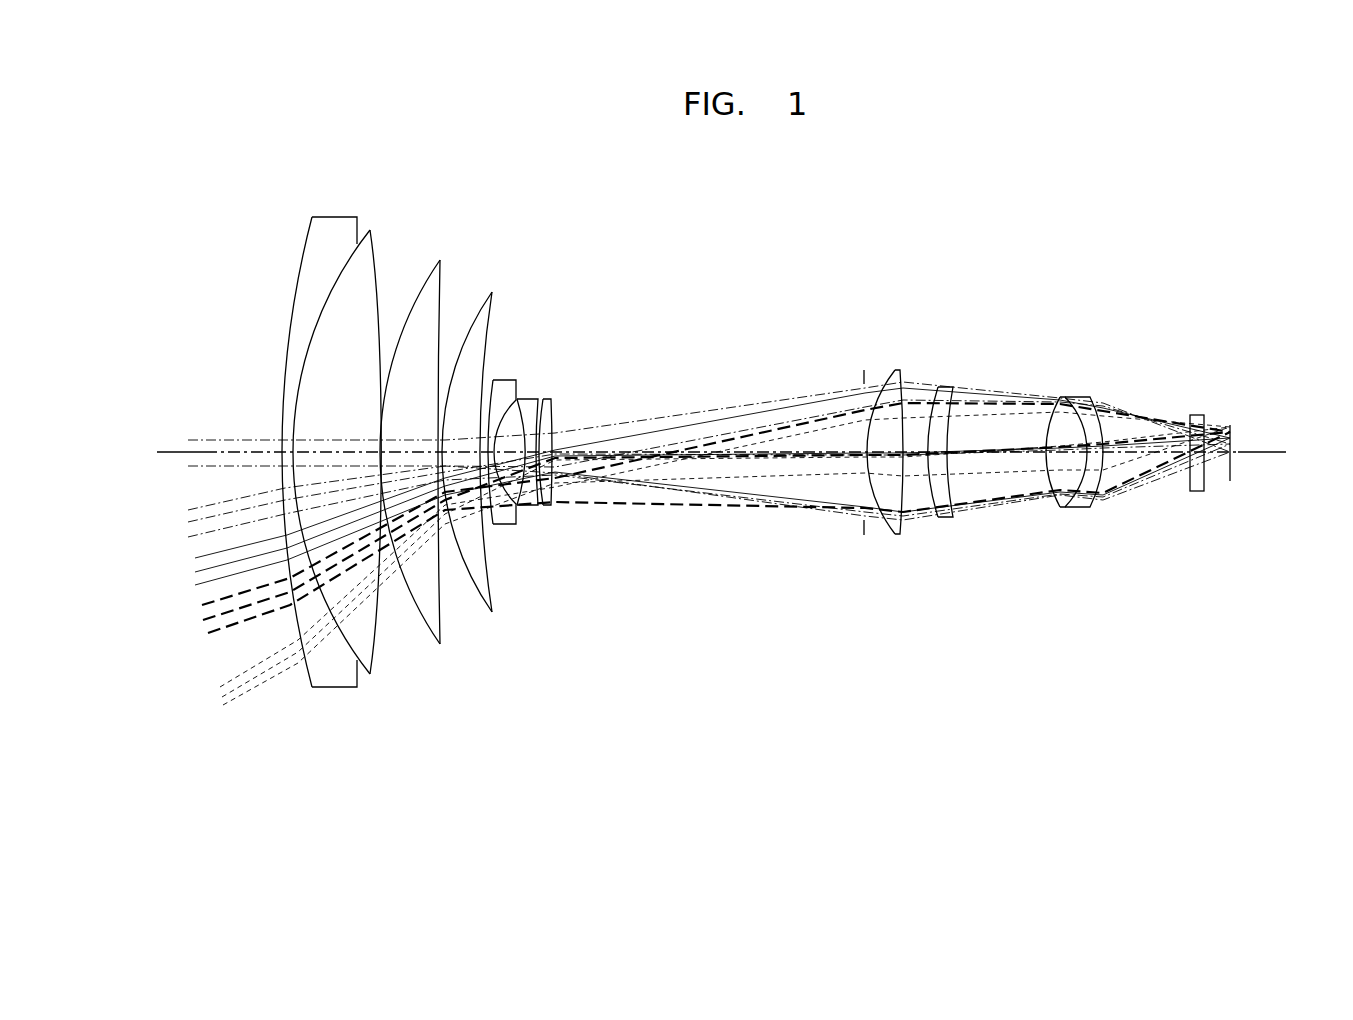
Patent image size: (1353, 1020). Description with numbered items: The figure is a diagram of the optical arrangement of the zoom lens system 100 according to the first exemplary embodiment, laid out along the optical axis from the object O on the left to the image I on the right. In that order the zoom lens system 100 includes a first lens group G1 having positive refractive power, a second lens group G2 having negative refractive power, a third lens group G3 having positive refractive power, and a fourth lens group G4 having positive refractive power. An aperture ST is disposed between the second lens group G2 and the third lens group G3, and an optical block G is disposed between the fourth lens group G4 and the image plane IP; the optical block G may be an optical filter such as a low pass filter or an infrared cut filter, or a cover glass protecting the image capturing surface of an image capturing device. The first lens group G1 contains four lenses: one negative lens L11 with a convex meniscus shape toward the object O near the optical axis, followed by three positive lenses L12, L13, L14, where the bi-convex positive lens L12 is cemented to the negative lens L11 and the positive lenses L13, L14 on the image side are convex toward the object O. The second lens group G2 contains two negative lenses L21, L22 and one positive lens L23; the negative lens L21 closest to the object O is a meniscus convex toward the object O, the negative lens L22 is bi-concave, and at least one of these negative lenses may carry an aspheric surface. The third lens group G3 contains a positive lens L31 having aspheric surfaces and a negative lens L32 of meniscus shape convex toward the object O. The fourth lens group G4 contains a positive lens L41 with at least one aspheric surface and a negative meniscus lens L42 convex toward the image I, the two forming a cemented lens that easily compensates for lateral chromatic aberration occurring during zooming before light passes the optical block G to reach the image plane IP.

The zoom lens system 100 is at (1137, 223).
The first lens group G1 is at (492, 208).
The second lens group G2 is at (553, 323).
The third lens group G3 is at (953, 323).
The fourth lens group G4 is at (1105, 323).
The optical block G is at (1198, 414).
The image plane IP is at (1229, 482).
The aperture ST is at (862, 538).
The object O is at (141, 453).
The image I is at (1298, 454).
The negative lens L11 is at (330, 690).
The positive lens L12 is at (373, 677).
The positive lens L13 is at (442, 623).
The positive lens L14 is at (490, 597).
The negative lens L21 is at (503, 528).
The negative lens L22 is at (531, 509).
The positive lens L23 is at (556, 505).
The positive lens L31 is at (900, 540).
The negative lens L32 is at (950, 525).
The positive lens L41 is at (1061, 514).
The negative lens L42 is at (1089, 510).